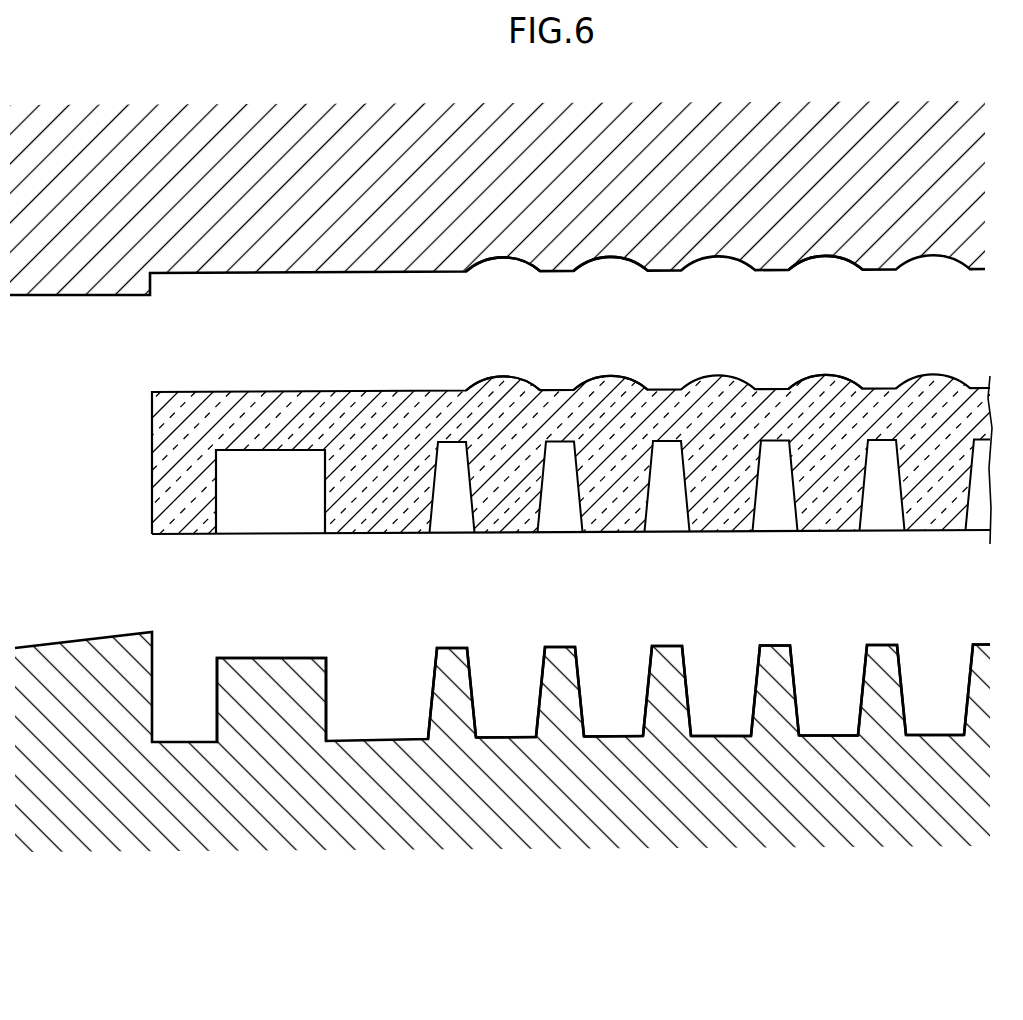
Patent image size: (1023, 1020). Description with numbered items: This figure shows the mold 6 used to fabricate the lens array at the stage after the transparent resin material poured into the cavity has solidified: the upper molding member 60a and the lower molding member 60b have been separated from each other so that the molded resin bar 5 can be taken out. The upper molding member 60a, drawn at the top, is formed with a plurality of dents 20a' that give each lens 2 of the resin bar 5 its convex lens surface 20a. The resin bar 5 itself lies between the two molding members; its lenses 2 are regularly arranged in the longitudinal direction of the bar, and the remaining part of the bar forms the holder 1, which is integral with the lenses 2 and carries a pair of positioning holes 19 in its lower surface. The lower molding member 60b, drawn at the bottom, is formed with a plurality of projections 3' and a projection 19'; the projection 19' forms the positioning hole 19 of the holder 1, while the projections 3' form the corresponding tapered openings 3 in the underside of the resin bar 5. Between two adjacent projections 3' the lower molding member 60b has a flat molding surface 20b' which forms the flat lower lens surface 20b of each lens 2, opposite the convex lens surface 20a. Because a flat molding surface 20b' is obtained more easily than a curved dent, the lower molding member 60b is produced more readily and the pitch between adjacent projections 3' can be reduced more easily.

The mold 6 is at (293, 103).
The upper molding member 60a is at (465, 135).
The dents 20a' is at (654, 229).
The resin bar 5 is at (148, 439).
The holder 1 is at (390, 417).
The lenses 2 is at (497, 437).
The convex lens surface 20a is at (678, 362).
The positioning holes 19 is at (270, 518).
The tapered holes 3 is at (710, 512).
The flat lens surface 20b is at (571, 557).
The projections 19' is at (271, 672).
The projections 3' is at (709, 673).
The flat molding surface 20b' is at (720, 705).
The lower molding member 60b is at (598, 805).